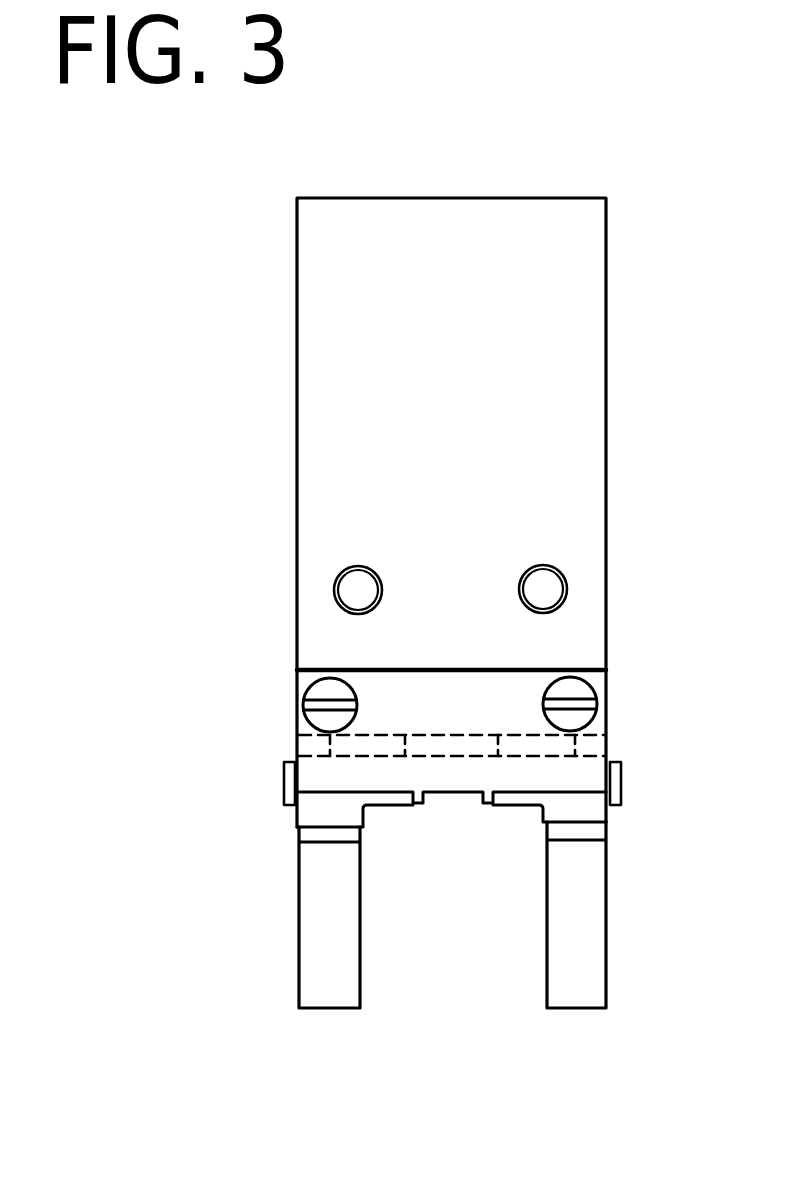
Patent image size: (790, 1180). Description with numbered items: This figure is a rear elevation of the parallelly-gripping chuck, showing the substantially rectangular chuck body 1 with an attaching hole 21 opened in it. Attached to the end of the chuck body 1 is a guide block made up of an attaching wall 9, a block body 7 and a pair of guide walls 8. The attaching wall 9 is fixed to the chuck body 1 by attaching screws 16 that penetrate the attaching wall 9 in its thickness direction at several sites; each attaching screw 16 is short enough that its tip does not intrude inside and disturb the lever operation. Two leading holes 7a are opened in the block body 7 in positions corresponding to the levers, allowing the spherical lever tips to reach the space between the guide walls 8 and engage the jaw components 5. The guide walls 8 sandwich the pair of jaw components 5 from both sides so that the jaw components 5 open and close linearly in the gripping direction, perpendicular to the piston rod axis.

The chuck body 1 is at (597, 262).
The attaching hole 21 is at (352, 590).
The attaching wall 9 is at (484, 690).
The attaching screw 16 is at (325, 702).
The guide wall 8 is at (565, 776).
The block body 7 is at (462, 756).
The leading hole 7a is at (382, 756).
The jaw component 5 is at (312, 915).